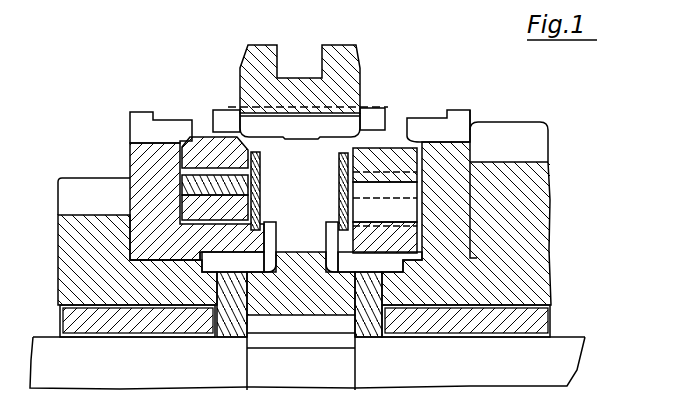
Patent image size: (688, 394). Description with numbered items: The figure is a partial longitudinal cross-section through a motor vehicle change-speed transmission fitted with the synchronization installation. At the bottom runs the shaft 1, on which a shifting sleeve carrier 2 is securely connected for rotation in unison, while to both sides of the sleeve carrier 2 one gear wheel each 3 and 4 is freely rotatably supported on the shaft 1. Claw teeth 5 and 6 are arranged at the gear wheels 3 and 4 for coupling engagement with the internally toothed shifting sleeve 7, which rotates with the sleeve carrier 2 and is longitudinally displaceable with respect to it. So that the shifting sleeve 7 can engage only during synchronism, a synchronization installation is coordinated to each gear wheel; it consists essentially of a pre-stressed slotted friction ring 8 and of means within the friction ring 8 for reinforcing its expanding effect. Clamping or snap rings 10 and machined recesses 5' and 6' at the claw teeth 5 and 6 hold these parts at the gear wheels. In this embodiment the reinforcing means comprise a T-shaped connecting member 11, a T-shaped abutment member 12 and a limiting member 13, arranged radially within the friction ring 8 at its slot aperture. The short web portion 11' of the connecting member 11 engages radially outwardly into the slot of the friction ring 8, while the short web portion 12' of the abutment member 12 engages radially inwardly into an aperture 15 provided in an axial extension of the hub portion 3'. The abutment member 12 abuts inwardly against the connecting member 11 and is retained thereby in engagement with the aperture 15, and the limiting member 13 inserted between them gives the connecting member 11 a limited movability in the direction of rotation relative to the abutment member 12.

The shaft 1 is at (408, 375).
The shifting sleeve carrier 2 is at (307, 193).
The gear wheel 3 is at (119, 241).
The hub portion 3' is at (112, 278).
The gear wheel 4 is at (527, 187).
The claw teeth 5 is at (143, 127).
The machined recess 5' is at (197, 170).
The claw teeth 6 is at (447, 110).
The machined recess 6' is at (429, 192).
The shifting sleeve 7 is at (338, 63).
The friction ring 8 is at (213, 152).
The snap ring 10 is at (340, 193).
The connecting member 11 is at (168, 166).
The web portion 11' is at (385, 131).
The abutment member 12 is at (168, 191).
The web portion 12' is at (471, 237).
The limiting member 13 is at (396, 210).
The aperture 15 is at (335, 240).